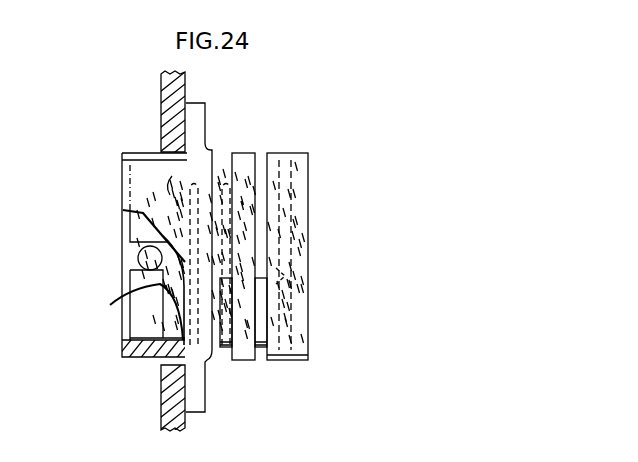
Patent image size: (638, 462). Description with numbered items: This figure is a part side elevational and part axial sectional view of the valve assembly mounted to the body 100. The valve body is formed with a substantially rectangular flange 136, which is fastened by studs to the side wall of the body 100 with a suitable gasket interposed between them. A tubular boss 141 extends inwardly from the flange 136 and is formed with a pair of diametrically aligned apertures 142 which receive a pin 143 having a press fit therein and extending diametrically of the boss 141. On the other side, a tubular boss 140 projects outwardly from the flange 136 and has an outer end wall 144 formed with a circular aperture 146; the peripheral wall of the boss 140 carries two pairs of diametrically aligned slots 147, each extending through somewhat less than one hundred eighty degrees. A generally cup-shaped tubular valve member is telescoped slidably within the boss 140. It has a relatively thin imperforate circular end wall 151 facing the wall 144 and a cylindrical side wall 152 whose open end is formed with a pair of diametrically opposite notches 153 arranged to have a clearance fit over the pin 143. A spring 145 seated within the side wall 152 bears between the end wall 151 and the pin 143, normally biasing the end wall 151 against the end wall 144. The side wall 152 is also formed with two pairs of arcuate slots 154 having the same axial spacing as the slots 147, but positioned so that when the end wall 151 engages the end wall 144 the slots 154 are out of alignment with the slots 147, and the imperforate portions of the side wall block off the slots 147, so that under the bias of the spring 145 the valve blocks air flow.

The body 100 is at (161, 88).
The flange 136 is at (205, 400).
The tubular boss 140 is at (310, 364).
The tubular boss 141 is at (150, 362).
The apertures 142 is at (132, 242).
The pin 143 is at (139, 254).
The outer end wall 144 is at (303, 338).
The spring 145 is at (158, 188).
The circular aperture 146 is at (303, 198).
The slots 147 is at (262, 163).
The end wall 151 is at (280, 278).
The side wall 152 is at (143, 228).
The notches 153 is at (140, 291).
The slots 154 is at (238, 192).